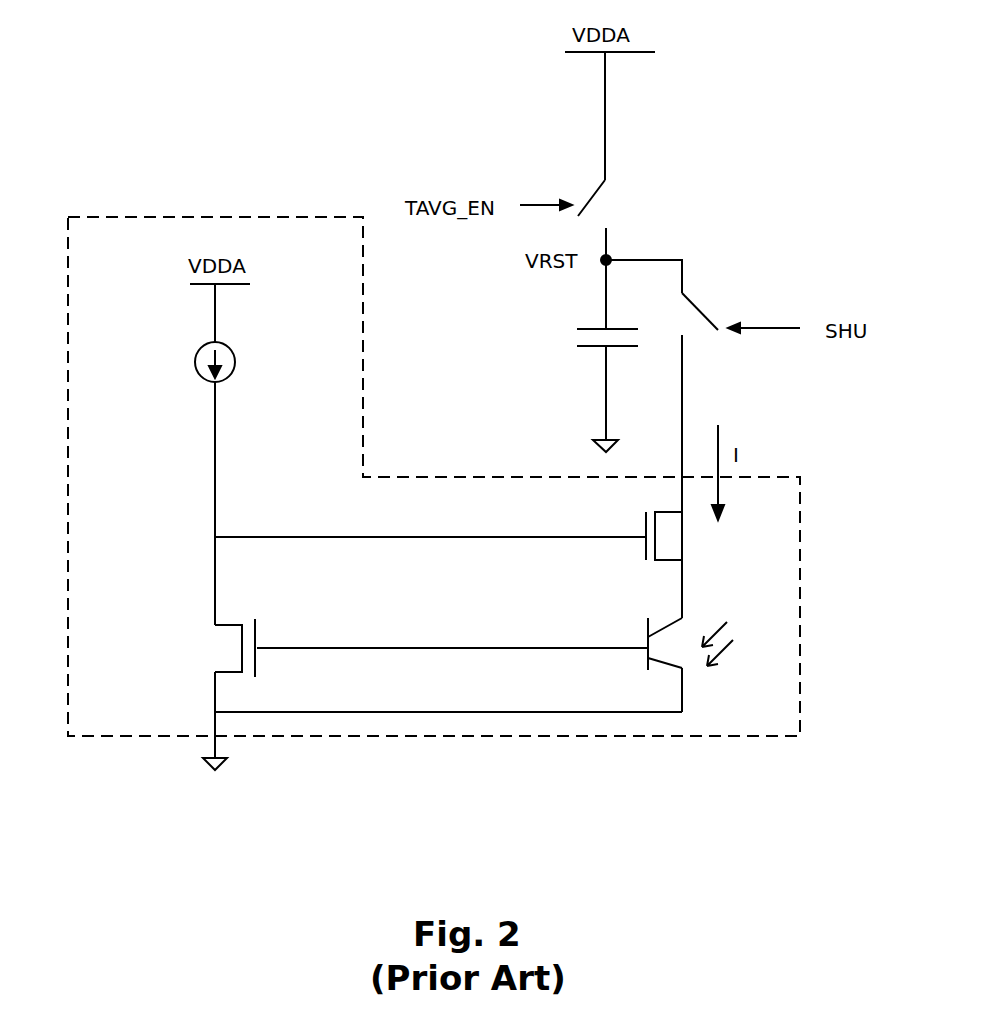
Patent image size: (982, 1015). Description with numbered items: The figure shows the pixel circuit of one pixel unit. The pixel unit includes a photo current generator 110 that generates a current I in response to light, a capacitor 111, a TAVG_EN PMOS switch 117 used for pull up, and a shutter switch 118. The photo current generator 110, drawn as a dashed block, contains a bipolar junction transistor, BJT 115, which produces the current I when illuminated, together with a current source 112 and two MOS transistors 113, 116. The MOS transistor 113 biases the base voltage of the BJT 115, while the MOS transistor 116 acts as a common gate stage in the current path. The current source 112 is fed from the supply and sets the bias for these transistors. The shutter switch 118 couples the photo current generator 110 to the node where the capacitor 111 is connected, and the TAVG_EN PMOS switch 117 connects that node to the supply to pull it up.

The photo current generator 110 is at (126, 256).
The capacitor 111 is at (595, 347).
The current source 112 is at (236, 360).
The MOS transistor 113 is at (214, 650).
The BJT 115 is at (640, 614).
The MOS transistor 116 is at (690, 541).
The TAVG_EN PMOS switch 117 is at (618, 196).
The shutter switch 118 is at (708, 344).